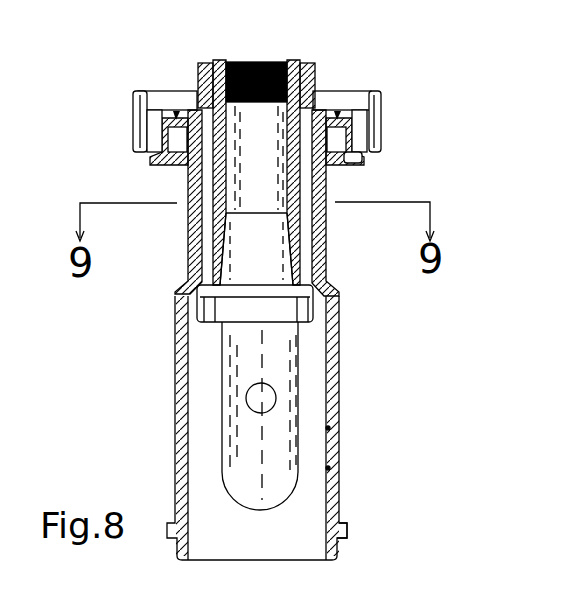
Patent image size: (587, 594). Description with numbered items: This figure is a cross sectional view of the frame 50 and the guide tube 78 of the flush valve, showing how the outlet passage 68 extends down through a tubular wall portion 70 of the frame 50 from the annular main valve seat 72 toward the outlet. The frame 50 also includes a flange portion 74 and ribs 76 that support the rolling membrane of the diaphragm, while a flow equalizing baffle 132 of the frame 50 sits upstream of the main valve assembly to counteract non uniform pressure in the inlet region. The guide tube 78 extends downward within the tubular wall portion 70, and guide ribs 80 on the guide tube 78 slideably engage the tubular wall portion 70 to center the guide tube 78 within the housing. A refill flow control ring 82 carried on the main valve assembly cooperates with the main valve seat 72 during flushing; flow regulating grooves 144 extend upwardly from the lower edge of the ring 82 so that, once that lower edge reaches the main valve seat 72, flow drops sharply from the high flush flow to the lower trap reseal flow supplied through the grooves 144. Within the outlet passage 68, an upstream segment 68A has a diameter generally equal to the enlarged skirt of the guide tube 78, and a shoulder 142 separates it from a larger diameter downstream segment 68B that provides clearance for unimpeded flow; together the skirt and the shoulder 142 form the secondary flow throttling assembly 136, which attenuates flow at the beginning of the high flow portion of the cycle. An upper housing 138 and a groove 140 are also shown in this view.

The frame 50 is at (333, 503).
The outlet passage 68 is at (268, 556).
The upstream segment 68A is at (190, 273).
The downstream segment 68B is at (180, 449).
The tubular wall portion 70 is at (330, 468).
The main valve seat 72 is at (323, 118).
The flange portion 74 is at (149, 97).
The ribs 76 is at (141, 147).
The guide tube 78 is at (216, 184).
The guide ribs 80 is at (218, 214).
The refill flow control ring 82 is at (203, 62).
The flow equalizing baffle 132 is at (347, 162).
The secondary flow throttling assembly 136 is at (372, 334).
The upper housing 138 is at (406, 136).
The groove 140 is at (330, 428).
The shoulder 142 is at (323, 284).
The flow regulating grooves 144 is at (197, 90).